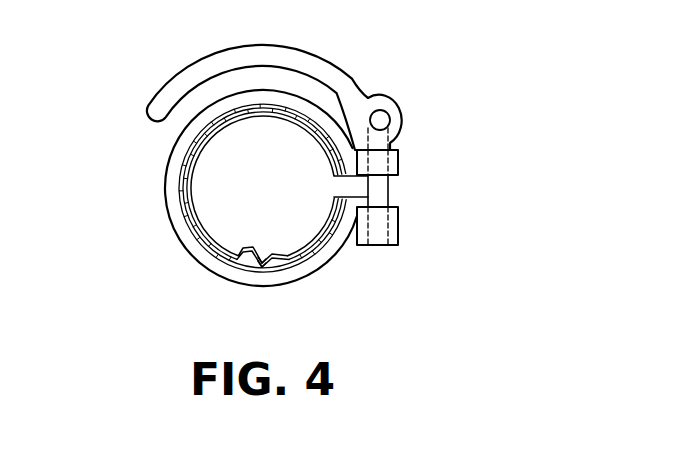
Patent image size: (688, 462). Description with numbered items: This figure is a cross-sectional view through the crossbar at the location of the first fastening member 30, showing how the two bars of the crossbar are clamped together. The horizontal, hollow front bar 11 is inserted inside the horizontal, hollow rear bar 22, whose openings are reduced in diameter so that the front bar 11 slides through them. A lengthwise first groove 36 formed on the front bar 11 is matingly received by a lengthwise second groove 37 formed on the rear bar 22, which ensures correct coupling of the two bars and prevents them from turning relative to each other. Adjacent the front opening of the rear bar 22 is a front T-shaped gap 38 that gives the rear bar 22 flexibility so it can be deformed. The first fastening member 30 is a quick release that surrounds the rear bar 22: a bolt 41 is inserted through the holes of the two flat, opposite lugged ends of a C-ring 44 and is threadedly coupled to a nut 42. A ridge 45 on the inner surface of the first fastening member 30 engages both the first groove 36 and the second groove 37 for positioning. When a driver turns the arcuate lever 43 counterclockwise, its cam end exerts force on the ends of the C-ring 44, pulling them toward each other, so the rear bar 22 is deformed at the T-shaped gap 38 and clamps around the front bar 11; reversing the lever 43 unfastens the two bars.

The first fastening member 30 is at (403, 84).
The front bar 11 is at (200, 235).
The rear bar 22 is at (186, 201).
The first groove 36 is at (241, 253).
The second groove 37 is at (262, 268).
The front T-shaped gap 38 is at (372, 191).
The bolt 41 is at (383, 137).
The nut 42 is at (399, 228).
The arcuate lever 43 is at (331, 62).
The C-ring 44 is at (176, 152).
The ridge 45 is at (268, 264).